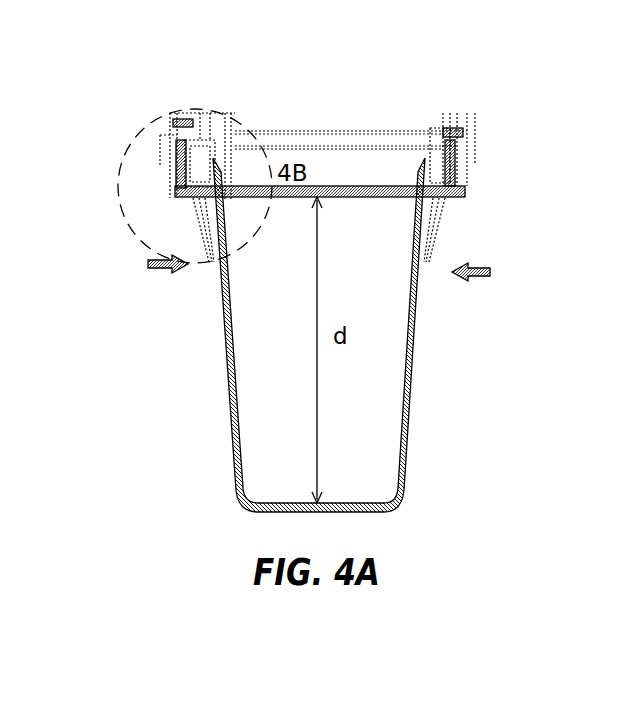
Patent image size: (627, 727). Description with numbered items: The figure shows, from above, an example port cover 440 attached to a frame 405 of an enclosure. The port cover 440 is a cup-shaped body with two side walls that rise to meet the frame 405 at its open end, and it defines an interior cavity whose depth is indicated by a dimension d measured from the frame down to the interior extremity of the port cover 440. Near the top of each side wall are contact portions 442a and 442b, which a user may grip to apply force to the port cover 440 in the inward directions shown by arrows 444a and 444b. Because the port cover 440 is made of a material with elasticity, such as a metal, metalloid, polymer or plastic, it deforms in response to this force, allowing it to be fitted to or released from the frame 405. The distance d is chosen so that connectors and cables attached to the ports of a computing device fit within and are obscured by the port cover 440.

The frame 405 is at (463, 187).
The port cover 440 is at (404, 462).
The contact portion 442a is at (206, 250).
The contact portion 442b is at (440, 227).
The arrow 444a is at (150, 264).
The arrow 444b is at (490, 273).